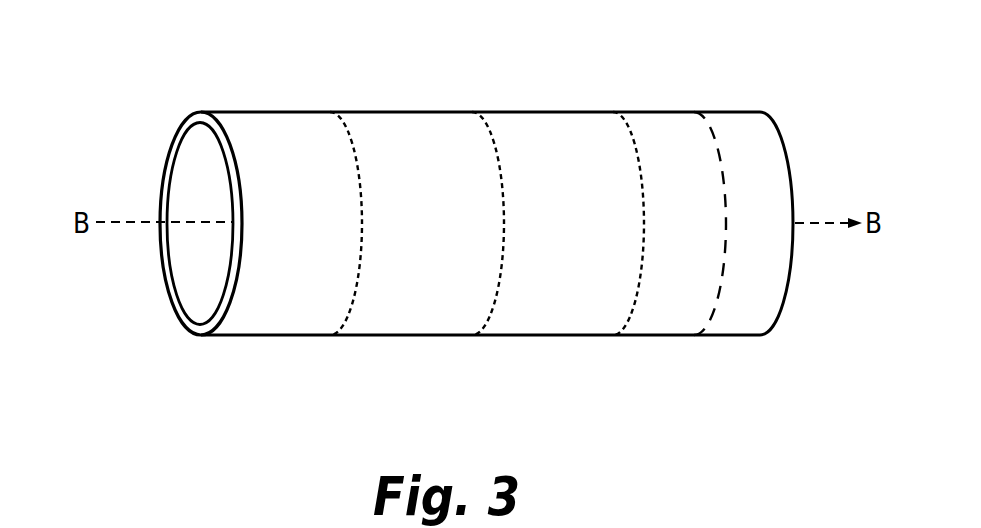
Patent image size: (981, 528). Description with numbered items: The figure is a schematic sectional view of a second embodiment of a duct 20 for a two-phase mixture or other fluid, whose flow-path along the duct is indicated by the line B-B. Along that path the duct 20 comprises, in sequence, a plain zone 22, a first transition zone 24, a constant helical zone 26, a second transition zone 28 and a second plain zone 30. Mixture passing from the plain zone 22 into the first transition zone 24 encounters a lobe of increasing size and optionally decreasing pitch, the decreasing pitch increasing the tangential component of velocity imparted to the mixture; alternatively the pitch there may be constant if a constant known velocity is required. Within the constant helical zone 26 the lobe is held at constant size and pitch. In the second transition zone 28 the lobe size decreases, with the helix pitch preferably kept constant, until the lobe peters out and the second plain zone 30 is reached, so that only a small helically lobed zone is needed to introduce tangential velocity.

The duct 20 is at (378, 103).
The plain zone 22 is at (245, 125).
The first transition zone 24 is at (435, 130).
The constant helical zone 26 is at (535, 317).
The second transition zone 28 is at (678, 317).
The second plain zone 30 is at (762, 285).